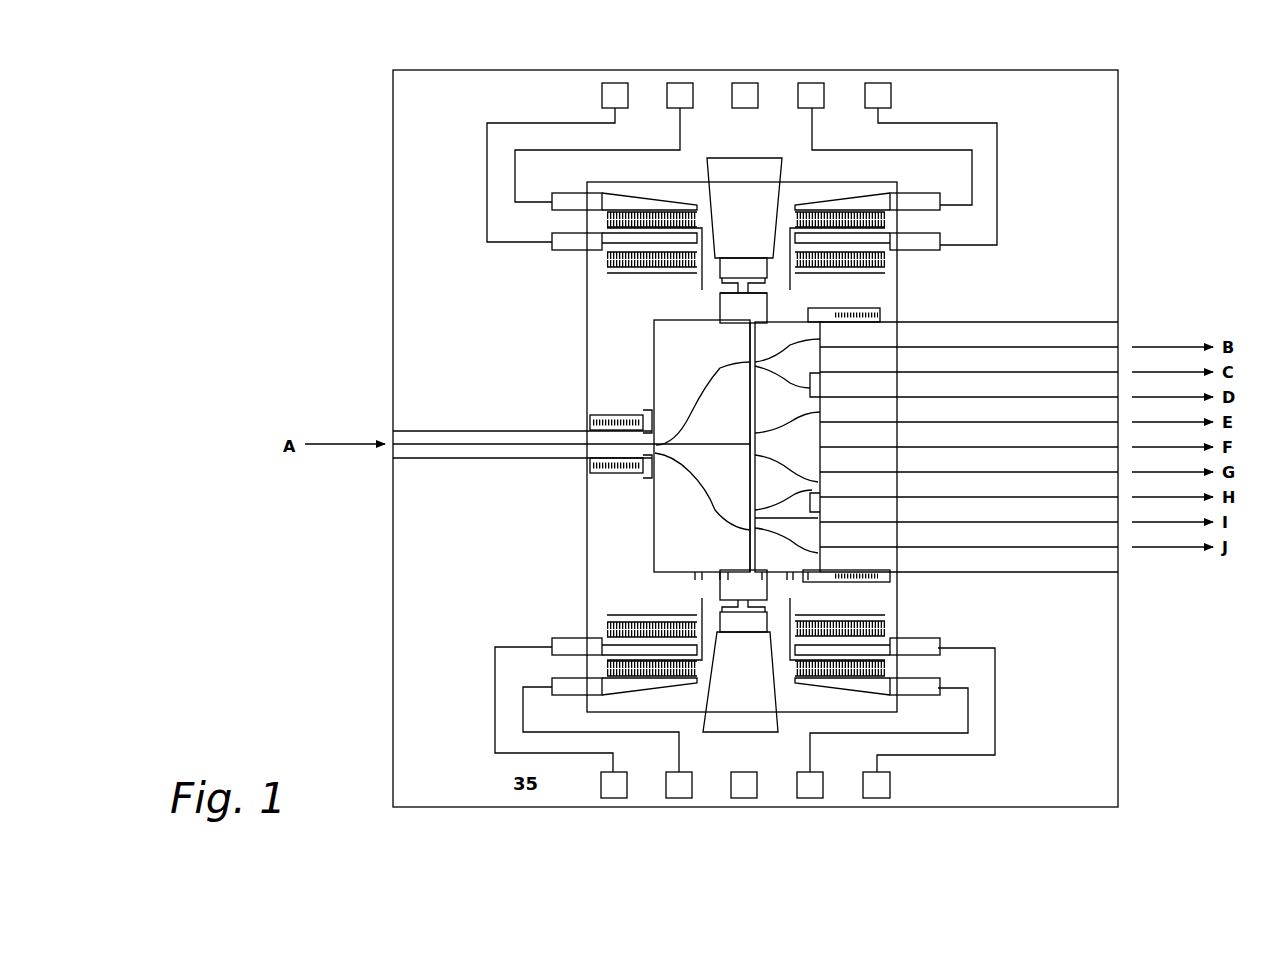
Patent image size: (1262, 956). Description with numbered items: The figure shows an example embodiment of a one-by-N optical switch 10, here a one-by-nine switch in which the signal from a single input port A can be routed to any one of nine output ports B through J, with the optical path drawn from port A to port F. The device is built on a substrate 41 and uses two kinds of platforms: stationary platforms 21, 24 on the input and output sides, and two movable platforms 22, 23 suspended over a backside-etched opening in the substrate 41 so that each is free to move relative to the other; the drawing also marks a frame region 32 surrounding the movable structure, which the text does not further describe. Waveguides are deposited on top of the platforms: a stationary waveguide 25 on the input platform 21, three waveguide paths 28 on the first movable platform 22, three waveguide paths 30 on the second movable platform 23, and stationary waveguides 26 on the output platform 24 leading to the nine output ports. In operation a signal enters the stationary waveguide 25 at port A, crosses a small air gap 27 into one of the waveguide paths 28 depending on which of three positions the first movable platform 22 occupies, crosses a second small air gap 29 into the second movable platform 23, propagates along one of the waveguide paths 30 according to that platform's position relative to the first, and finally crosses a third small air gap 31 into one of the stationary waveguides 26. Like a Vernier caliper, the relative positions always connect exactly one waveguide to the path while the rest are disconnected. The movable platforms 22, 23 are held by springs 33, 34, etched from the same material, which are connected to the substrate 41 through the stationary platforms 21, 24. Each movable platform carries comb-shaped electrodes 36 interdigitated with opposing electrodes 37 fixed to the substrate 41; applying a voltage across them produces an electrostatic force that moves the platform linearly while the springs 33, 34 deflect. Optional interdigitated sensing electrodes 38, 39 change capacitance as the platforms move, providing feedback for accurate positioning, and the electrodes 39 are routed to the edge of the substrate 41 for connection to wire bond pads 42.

The 1×N optical switch 10 is at (375, 162).
The stationary platform 21 is at (468, 431).
The first movable platform 22 is at (733, 578).
The second movable platform 23 is at (772, 580).
The stationary platform 24 is at (1067, 318).
The stationary waveguide 25 is at (435, 444).
The stationary waveguides 26 is at (1060, 498).
The small air gap 27 is at (650, 452).
The waveguide paths 28 is at (725, 445).
The second small air gap 29 is at (745, 449).
The waveguide paths 30 is at (800, 385).
The third small air gap 31 is at (823, 448).
The movable frame 32 is at (585, 552).
The springs 33 is at (590, 426).
The springs 34 is at (770, 279).
The electrodes 36 is at (600, 619).
The opposing electrodes 37 is at (550, 652).
The sensing electrodes 38 is at (602, 661).
The sensing electrodes 39 is at (550, 694).
The substrate 41 is at (1122, 171).
The wire bond pads 42 is at (893, 787).